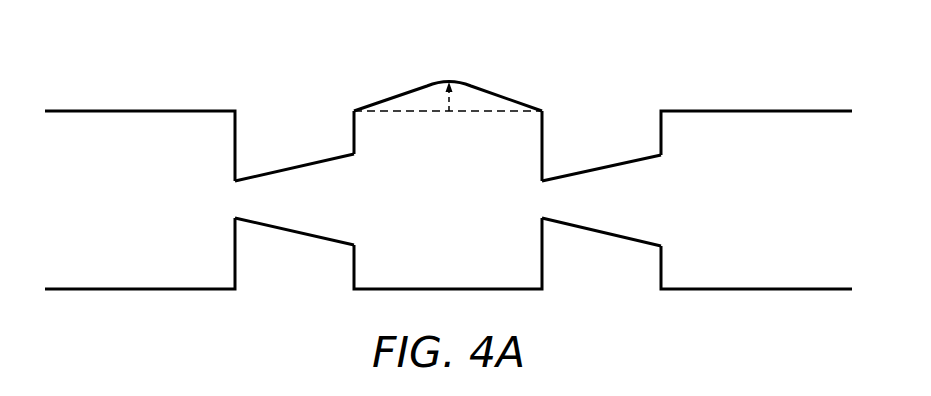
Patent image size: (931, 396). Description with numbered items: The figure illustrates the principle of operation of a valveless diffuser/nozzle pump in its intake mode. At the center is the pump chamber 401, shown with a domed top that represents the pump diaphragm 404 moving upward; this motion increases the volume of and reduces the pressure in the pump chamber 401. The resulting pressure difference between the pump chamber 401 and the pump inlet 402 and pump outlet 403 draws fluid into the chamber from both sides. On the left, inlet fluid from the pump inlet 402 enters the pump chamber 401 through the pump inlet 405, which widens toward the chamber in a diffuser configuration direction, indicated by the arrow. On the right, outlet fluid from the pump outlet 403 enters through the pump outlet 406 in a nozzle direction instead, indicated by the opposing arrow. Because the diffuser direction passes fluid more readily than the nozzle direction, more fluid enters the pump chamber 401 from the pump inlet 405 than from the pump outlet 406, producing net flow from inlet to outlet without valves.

The pump chamber 401 is at (428, 210).
The pump inlet 402 is at (224, 200).
The pump outlet 403 is at (673, 200).
The pump diaphragm 404 is at (500, 92).
The pump inlet 405 is at (292, 210).
The pump outlet 406 is at (598, 210).